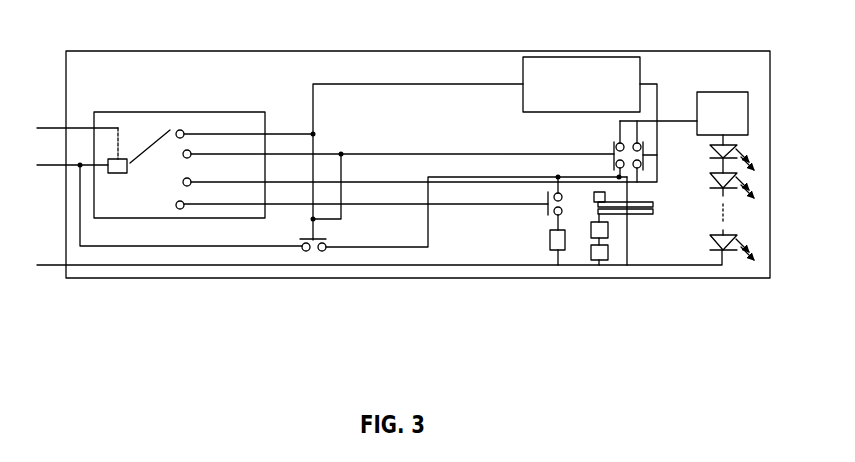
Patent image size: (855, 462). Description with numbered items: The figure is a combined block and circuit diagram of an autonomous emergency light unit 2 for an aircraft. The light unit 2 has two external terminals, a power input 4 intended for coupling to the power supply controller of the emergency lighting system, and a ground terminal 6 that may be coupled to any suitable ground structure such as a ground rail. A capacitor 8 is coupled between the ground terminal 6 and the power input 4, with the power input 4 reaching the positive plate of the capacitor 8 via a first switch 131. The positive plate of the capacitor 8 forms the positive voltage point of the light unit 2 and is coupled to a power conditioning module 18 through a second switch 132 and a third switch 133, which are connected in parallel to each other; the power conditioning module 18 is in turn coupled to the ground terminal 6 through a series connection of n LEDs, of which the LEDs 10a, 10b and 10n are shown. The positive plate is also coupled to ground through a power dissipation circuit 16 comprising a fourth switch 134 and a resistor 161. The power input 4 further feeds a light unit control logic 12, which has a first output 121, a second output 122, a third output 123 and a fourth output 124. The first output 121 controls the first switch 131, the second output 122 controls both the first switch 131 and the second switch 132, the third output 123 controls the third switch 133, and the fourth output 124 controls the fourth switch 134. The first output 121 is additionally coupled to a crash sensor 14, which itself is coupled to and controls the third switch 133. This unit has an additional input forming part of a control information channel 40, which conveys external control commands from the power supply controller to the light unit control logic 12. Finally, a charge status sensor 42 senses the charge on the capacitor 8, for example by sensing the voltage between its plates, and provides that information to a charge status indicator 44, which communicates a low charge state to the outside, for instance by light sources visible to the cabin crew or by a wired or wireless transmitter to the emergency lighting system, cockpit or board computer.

The autonomous emergency light unit 2 is at (97, 50).
The power input 4 is at (63, 165).
The ground terminal 6 is at (63, 265).
The capacitor 8 is at (635, 216).
The LED 10a is at (713, 157).
The LED 10b is at (713, 185).
The LED 10n is at (713, 247).
The light unit control logic 12 is at (130, 112).
The crash sensor 14 is at (523, 100).
The power dissipation circuit 16 is at (528, 193).
The power conditioning module 18 is at (721, 92).
The control information channel 40 is at (50, 128).
The charge status sensor 42 is at (609, 229).
The charge status indicator 44 is at (602, 265).
The first output 121 is at (275, 132).
The second output 122 is at (292, 153).
The third output 123 is at (293, 204).
The fourth output 124 is at (283, 183).
The first switch 131 is at (320, 239).
The second switch 132 is at (610, 150).
The third switch 133 is at (647, 148).
The fourth switch 134 is at (547, 210).
The resistor 161 is at (550, 238).